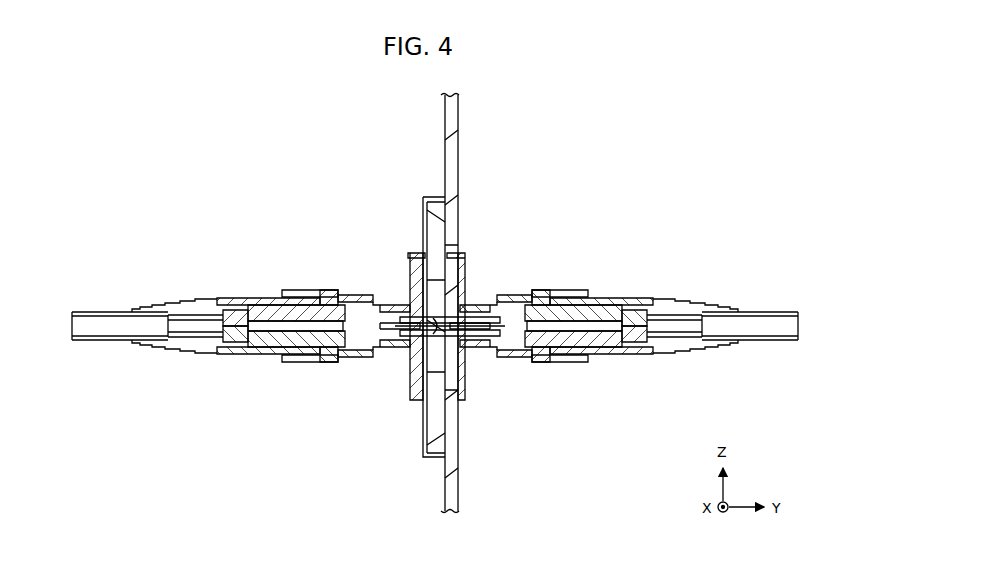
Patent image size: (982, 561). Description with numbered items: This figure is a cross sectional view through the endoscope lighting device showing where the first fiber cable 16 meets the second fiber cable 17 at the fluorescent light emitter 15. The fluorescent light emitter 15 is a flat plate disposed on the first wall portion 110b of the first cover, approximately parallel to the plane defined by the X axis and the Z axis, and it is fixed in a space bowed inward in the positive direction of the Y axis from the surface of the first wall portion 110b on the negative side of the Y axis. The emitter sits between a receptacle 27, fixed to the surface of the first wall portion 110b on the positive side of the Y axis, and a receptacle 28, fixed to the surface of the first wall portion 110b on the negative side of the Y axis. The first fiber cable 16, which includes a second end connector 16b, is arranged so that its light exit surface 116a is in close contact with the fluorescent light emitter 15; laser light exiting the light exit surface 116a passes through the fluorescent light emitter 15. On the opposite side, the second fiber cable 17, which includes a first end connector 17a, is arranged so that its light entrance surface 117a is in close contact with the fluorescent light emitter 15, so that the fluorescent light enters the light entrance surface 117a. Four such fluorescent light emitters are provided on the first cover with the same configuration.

The second fiber cable 17 is at (246, 302).
The first end connector 17a is at (252, 298).
The first fiber cable 16 is at (624, 301).
The second end connector 16b is at (607, 300).
The fluorescent light emitter 15 is at (418, 312).
The receptacle 28 is at (410, 313).
The receptacle 27 is at (482, 298).
The light entrance surface 117a is at (440, 318).
The light exit surface 116a is at (443, 345).
The first wall portion 110b is at (459, 118).